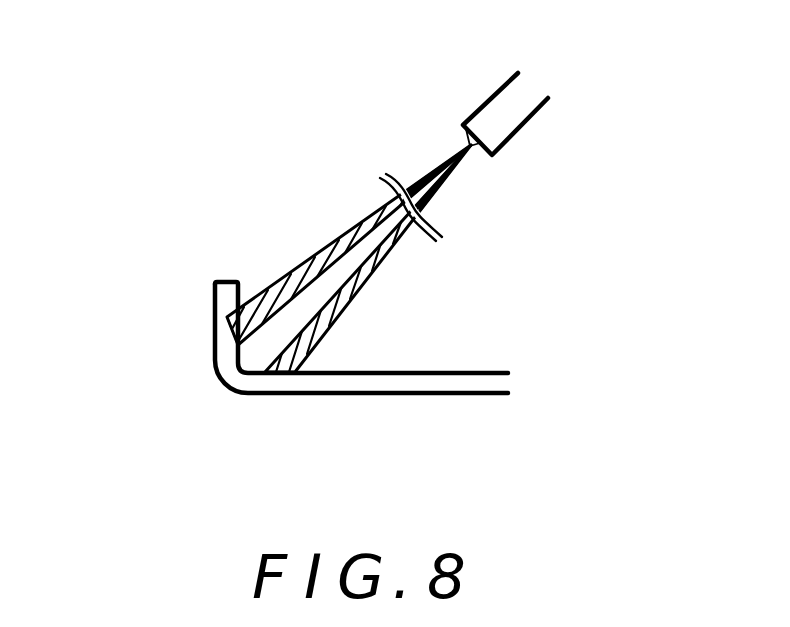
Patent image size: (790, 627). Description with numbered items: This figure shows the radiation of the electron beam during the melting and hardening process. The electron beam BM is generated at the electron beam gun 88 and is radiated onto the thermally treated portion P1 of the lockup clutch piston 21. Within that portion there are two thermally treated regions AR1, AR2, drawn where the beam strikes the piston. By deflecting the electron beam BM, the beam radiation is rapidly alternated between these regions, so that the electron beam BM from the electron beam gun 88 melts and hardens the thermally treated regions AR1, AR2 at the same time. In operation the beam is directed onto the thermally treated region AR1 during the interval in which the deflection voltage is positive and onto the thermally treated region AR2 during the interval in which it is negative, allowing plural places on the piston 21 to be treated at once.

The electron beam gun 88 is at (523, 127).
The lockup clutch piston 21 is at (436, 372).
The electron beam BM is at (381, 271).
The thermally treated portion P1 is at (273, 252).
The thermally treated region AR1 is at (280, 376).
The thermally treated region AR2 is at (228, 331).